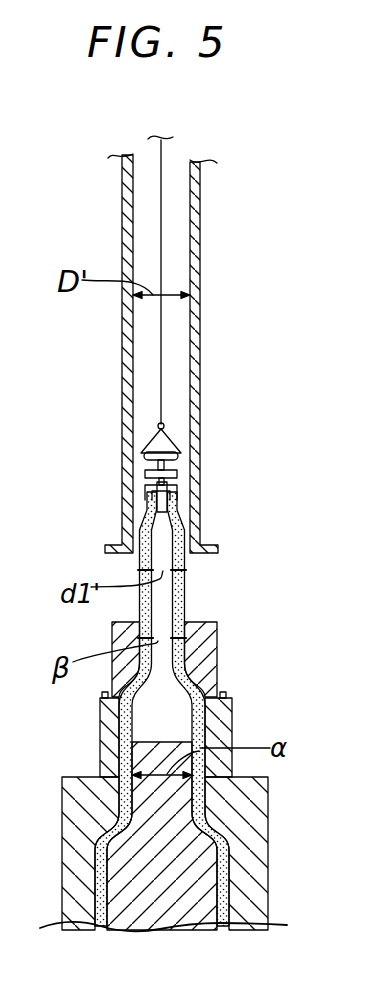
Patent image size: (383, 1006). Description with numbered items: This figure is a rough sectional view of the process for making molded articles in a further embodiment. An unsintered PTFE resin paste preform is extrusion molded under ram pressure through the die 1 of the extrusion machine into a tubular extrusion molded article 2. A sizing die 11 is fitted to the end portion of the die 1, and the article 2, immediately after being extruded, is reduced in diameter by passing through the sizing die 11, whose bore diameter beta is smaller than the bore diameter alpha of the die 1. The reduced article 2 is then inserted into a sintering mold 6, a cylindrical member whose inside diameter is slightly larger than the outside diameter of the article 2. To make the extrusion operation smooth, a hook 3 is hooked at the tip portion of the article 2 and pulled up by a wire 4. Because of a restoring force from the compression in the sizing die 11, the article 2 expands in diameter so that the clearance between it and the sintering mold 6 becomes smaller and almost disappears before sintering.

The die 1 is at (243, 822).
The extrusion molded article 2 is at (187, 590).
The hook 3 is at (166, 490).
The wire 4 is at (162, 245).
The sintering mold 6 is at (191, 333).
The sizing die 11 is at (203, 652).